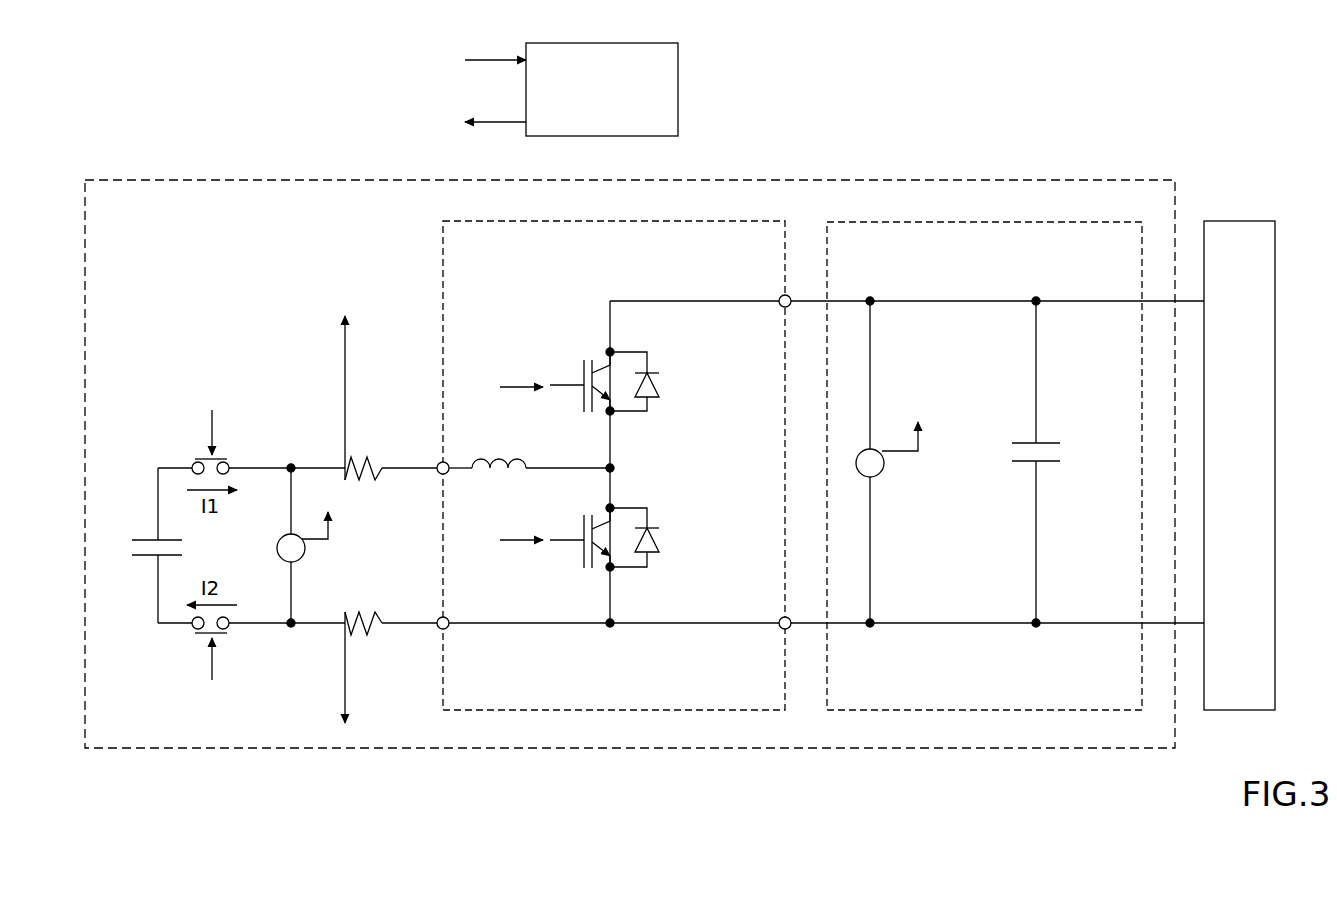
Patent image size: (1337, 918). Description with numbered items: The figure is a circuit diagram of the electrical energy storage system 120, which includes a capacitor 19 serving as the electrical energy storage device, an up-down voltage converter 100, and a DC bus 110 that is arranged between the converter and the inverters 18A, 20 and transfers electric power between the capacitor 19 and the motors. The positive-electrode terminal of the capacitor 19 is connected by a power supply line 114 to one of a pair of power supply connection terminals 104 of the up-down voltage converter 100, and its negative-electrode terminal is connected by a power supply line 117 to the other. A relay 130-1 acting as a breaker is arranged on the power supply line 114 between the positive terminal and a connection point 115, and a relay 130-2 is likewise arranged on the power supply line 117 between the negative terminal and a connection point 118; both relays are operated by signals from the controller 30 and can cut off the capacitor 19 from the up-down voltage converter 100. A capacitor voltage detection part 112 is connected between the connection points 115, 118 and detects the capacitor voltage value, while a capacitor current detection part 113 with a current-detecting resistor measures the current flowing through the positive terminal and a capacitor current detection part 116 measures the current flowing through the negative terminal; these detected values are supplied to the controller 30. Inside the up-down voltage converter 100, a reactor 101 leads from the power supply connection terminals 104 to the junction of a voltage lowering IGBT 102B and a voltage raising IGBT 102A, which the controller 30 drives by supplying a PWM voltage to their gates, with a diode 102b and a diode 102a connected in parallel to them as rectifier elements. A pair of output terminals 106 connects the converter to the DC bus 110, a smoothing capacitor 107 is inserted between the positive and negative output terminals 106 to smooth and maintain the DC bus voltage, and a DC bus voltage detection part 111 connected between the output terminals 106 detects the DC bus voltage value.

The controller 30 is at (620, 43).
The electrical energy storage system 120 is at (1078, 180).
The up-down voltage converter 100 is at (688, 221).
The DC bus 110 is at (1112, 222).
The inverter 18A is at (1240, 439).
The inverter 20 is at (1245, 221).
The power supply line 114 is at (158, 500).
The power supply line 117 is at (158, 597).
The capacitor 19 is at (183, 548).
The relay 130-1 is at (203, 453).
The relay 130-2 is at (203, 639).
The connection point 115 is at (291, 462).
The connection point 118 is at (291, 630).
The capacitor voltage detection part 112 is at (306, 549).
The capacitor current detection part 113 is at (358, 456).
The capacitor current detection part 116 is at (352, 636).
The power supply connection terminals 104 is at (438, 473).
The reactor 101 is at (505, 460).
The voltage lowering IGBT 102B is at (588, 356).
The diode 102b is at (659, 384).
The voltage raising IGBT 102A is at (585, 572).
The diode 102a is at (659, 541).
The output terminals 106 is at (780, 297).
The DC bus voltage detection part 111 is at (885, 462).
The smoothing capacitor 107 is at (1063, 456).